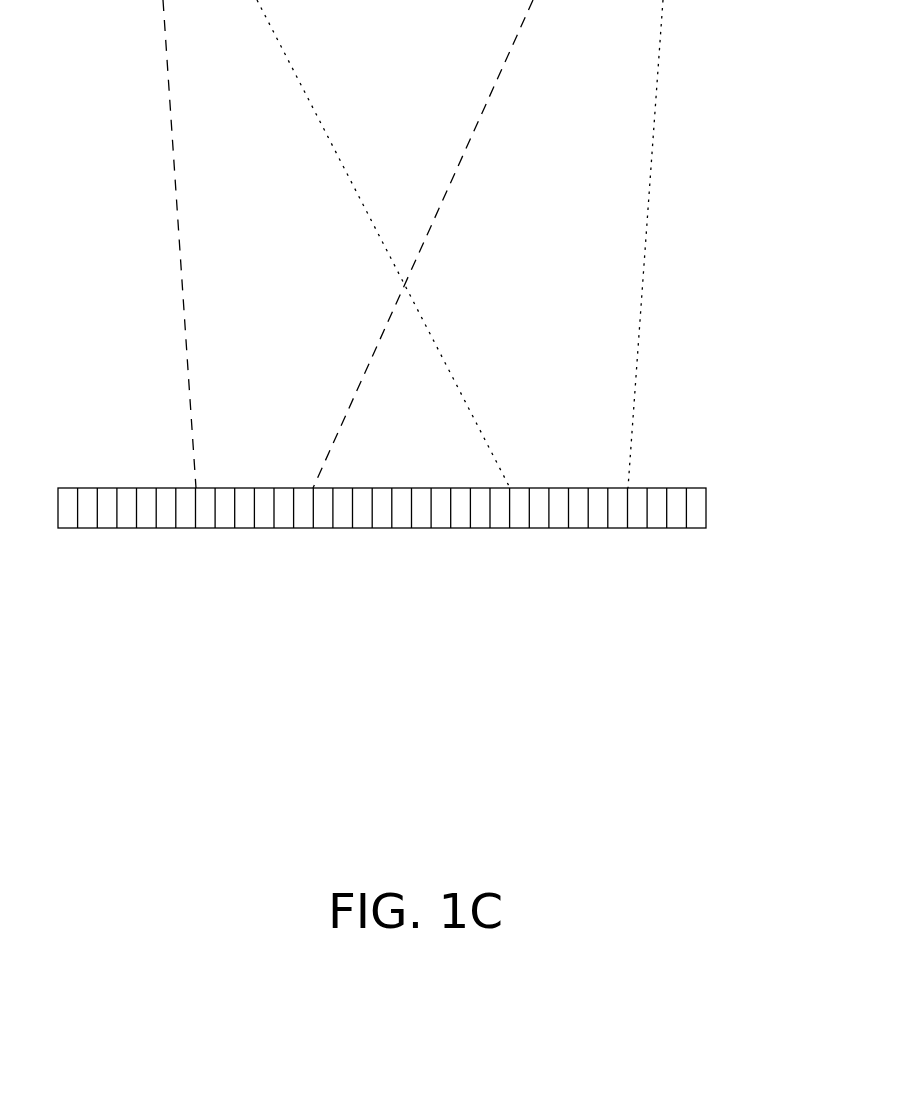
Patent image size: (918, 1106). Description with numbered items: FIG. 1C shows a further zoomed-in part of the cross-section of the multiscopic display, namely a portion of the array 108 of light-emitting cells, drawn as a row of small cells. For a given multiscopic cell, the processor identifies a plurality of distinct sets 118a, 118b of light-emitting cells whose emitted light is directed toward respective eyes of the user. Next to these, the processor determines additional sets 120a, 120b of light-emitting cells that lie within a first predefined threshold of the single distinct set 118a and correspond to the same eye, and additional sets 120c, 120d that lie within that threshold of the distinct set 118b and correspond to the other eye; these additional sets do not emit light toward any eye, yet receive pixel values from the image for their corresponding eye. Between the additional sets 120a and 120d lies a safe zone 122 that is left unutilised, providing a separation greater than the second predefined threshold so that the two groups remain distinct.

The array of light-emitting cells 108 is at (707, 489).
The distinct set of light-emitting cells 118a is at (517, 543).
The distinct set of light-emitting cells 118b is at (310, 543).
The additional set of light-emitting cells 120a is at (465, 543).
The additional set of light-emitting cells 120b is at (640, 543).
The additional set of light-emitting cells 120c is at (27, 543).
The additional set of light-emitting cells 120d is at (360, 543).
The safe zone 122 is at (363, 543).